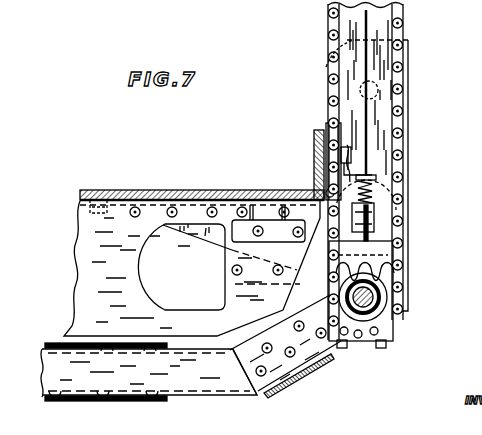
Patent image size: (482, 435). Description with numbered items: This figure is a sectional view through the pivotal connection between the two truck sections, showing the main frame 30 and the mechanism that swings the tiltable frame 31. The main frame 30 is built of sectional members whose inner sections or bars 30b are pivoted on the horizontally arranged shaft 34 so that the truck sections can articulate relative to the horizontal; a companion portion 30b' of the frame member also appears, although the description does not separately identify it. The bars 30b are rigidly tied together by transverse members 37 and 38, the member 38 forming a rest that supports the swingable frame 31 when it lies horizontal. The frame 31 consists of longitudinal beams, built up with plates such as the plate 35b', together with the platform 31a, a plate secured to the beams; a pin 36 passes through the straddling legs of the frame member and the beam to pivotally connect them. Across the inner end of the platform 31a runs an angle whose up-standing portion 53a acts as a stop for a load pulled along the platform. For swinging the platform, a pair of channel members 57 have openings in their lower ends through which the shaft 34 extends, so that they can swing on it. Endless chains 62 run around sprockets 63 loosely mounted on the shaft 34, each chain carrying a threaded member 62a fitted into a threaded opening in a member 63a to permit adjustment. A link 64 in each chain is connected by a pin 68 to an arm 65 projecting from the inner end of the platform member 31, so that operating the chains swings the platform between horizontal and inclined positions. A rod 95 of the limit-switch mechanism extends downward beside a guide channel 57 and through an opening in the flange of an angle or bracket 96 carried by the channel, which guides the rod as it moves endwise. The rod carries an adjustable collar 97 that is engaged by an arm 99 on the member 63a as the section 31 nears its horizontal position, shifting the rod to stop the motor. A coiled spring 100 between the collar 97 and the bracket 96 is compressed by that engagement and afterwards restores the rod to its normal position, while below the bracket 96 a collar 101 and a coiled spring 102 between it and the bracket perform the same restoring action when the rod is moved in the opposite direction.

The main frame 30 is at (149, 386).
The inner section 30b is at (27, 373).
The rail end wall 30b' is at (232, 389).
The swingable frame 31 is at (104, 190).
The platform 31a is at (191, 195).
The horizontal shaft 34 is at (398, 312).
The plate 35b' is at (170, 268).
The pin 36 is at (288, 386).
The transverse member 37 is at (87, 400).
The transverse member 38 is at (55, 343).
The up-standing portion 53a is at (314, 142).
The channel member 57 is at (404, 8).
The endless chain 62 is at (326, 72).
The threaded member 62a is at (326, 126).
The sprocket 63 is at (372, 280).
The member 63a is at (326, 150).
The link 64 is at (325, 190).
The arm 65 is at (316, 197).
The pin 68 is at (284, 270).
The rod 95 is at (368, 118).
The angle 96 is at (375, 208).
The adjustable collar 97 is at (376, 177).
The arm 99 is at (354, 157).
The coiled spring 100 is at (375, 190).
The collar 101 is at (372, 237).
The coiled spring 102 is at (370, 222).